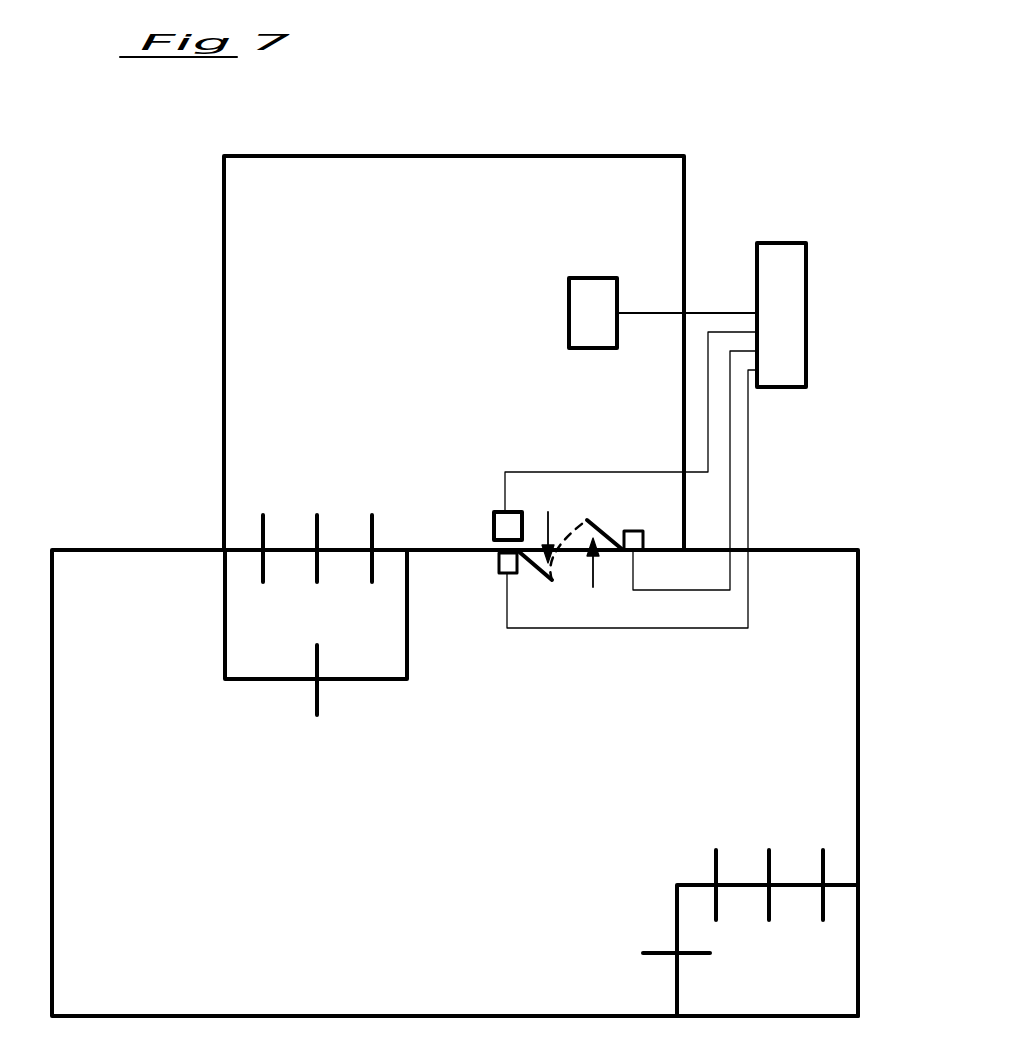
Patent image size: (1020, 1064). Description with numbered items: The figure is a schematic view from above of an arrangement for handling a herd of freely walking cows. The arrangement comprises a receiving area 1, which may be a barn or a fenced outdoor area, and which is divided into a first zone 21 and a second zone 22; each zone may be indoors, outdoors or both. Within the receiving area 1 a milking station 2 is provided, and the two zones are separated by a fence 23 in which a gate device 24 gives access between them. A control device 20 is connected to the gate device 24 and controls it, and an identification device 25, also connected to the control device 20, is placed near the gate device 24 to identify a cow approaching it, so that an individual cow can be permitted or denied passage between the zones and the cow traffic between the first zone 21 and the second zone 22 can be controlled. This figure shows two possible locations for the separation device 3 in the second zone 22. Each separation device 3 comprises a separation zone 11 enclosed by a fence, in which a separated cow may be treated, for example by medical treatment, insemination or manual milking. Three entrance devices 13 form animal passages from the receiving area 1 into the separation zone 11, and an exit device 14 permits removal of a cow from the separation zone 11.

The receiving area 1 is at (455, 586).
The milking station 2 is at (568, 308).
The separation device 3 is at (225, 635).
The separation zone 11 is at (558, 784).
The entrance devices 13 is at (368, 528).
The exit device 14 is at (314, 690).
The control device 20 is at (806, 303).
The first zone 21 is at (454, 353).
The second zone 22 is at (455, 783).
The fence 23 is at (460, 553).
The gate device 24 is at (565, 573).
The identification device 25 is at (497, 510).